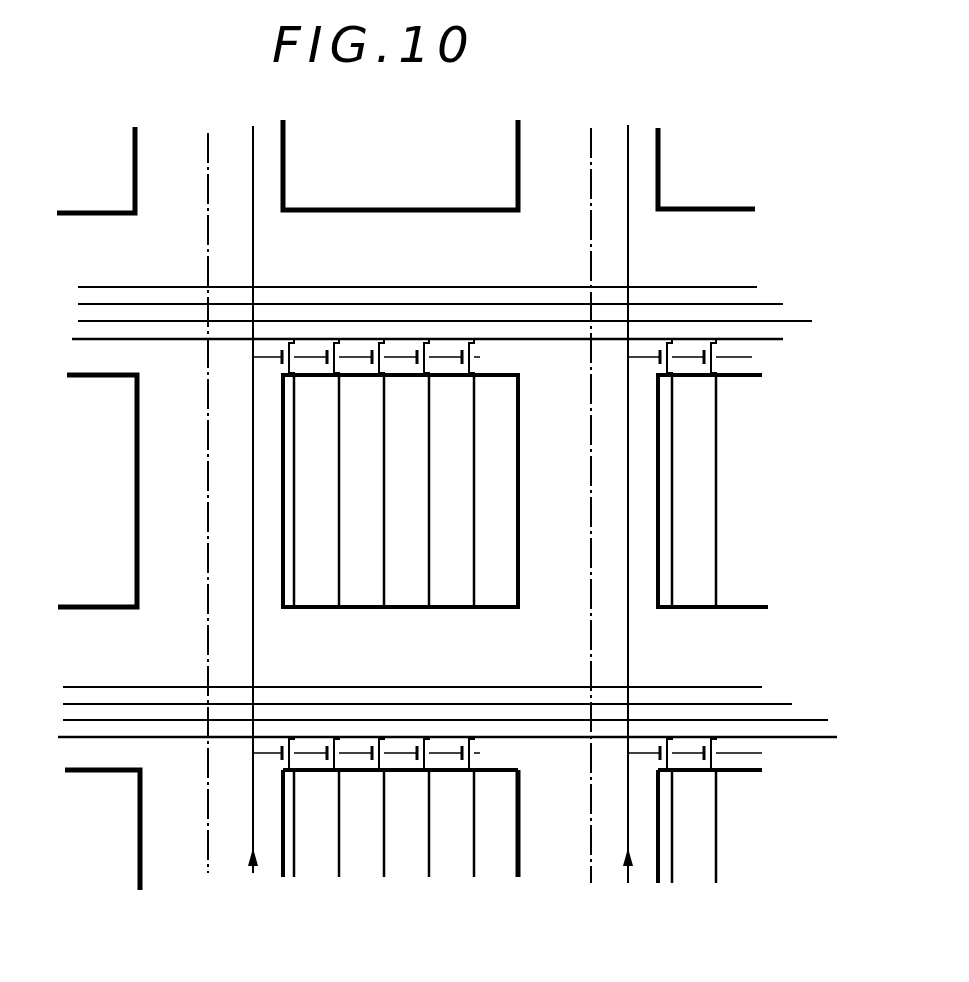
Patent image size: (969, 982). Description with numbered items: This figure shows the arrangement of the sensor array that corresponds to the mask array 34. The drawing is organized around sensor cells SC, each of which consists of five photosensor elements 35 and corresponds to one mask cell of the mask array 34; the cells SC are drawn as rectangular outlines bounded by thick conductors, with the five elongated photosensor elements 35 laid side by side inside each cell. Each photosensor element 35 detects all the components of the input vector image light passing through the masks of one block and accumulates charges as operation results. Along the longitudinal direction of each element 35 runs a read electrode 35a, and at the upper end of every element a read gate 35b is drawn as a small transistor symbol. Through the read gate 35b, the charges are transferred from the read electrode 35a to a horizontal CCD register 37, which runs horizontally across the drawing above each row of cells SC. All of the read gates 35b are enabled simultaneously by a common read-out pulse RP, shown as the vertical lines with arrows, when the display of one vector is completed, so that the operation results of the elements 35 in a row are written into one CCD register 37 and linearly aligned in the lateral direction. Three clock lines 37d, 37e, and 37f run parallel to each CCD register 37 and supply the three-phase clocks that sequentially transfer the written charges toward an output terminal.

The mask array 34 is at (717, 899).
The photosensor element 35 is at (338, 560).
The read electrode 35a is at (292, 568).
The read gate 35b is at (437, 362).
The horizontal CCD register 37 is at (770, 341).
The clock line 37d is at (293, 287).
The clock line 37e is at (385, 304).
The clock line 37f is at (490, 321).
The sensor cell SC is at (78, 214).
The read-out pulse RP is at (422, 523).